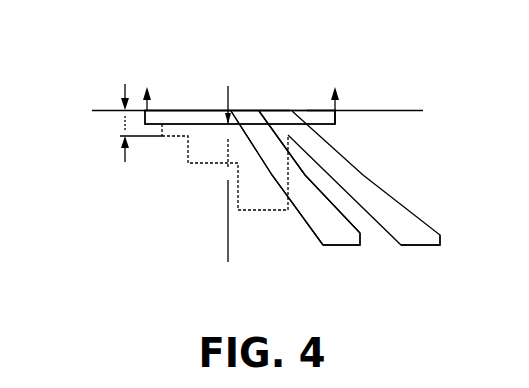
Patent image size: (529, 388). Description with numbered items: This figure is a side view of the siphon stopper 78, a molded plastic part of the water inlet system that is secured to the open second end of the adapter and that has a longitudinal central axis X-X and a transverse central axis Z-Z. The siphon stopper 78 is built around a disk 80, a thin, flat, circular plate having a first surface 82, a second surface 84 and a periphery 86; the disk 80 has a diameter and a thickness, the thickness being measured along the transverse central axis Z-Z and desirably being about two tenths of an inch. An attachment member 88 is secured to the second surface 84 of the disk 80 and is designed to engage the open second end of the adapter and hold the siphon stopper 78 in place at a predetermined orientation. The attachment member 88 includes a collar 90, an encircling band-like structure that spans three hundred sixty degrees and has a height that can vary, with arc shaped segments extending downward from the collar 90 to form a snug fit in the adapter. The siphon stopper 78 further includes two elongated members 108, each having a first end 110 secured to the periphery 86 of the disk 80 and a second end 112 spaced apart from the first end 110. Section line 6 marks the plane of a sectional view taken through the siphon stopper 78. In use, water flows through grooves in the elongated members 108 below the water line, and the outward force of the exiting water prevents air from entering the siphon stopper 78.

The siphon stopper 78 is at (362, 68).
The disk 80 is at (193, 100).
The first surface 82 is at (270, 110).
The second surface 84 is at (178, 138).
The periphery 86 is at (163, 122).
The attachment member 88 is at (205, 200).
The collar 90 is at (202, 152).
The elongated member 108 is at (313, 232).
The first end 110 is at (240, 110).
The second end 112 is at (343, 245).
The section line 6- 6 is at (241, 93).